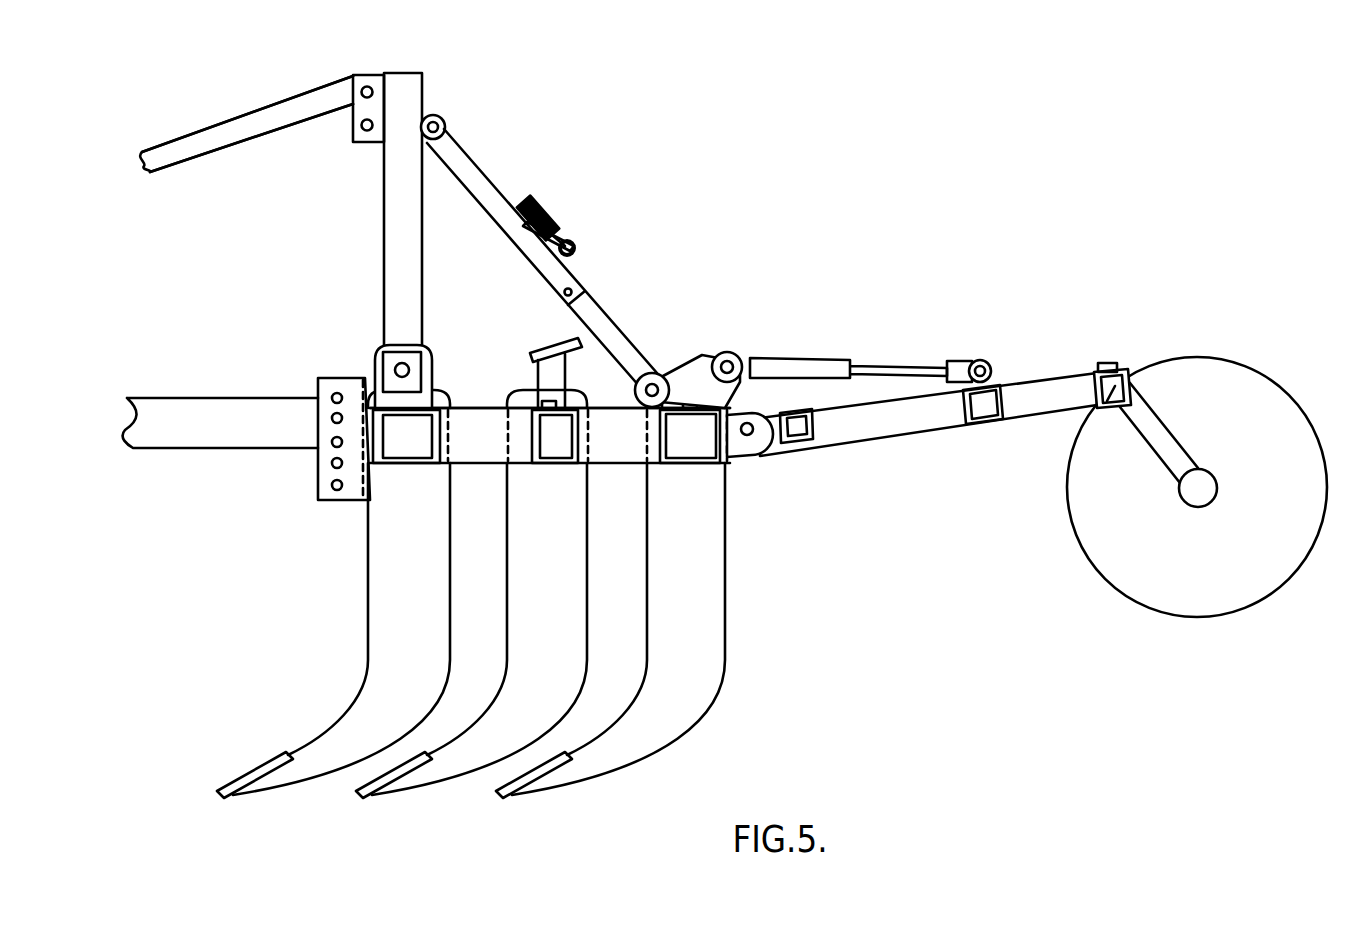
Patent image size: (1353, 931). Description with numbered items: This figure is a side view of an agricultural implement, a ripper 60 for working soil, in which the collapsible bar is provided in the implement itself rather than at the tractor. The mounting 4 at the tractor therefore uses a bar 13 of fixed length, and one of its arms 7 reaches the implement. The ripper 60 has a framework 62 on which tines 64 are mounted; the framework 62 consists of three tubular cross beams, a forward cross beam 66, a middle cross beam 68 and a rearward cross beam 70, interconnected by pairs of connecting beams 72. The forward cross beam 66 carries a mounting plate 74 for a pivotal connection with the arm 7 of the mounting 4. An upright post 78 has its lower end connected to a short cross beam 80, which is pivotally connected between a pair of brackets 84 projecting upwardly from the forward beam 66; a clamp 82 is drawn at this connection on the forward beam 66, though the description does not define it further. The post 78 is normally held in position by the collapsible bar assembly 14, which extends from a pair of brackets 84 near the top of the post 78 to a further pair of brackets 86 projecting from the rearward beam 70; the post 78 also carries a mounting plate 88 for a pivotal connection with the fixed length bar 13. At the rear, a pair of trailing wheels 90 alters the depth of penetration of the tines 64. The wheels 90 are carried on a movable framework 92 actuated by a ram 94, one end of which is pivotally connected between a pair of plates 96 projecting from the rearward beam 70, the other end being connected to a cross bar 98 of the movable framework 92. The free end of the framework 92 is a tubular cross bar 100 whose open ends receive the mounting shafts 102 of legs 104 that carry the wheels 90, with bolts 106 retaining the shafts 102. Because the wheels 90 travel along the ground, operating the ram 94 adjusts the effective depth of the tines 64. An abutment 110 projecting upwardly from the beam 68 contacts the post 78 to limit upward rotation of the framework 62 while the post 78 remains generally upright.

The mounting 4 is at (222, 110).
The arm 7 is at (175, 432).
The bar of fixed length 13 is at (188, 147).
The collapsible bar assembly 14 is at (485, 172).
The ripper 60 is at (630, 138).
The framework 62 is at (465, 468).
The tines 64 is at (393, 597).
The forward cross beam 66 is at (395, 470).
The cross beam 68 is at (522, 468).
The rearward cross beam 70 is at (660, 470).
The connecting beams 72 is at (465, 420).
The mounting plate 74 is at (330, 475).
The post 78 is at (395, 215).
The short cross beam 80 is at (378, 368).
The lower clamp 82 is at (427, 350).
The brackets 84 is at (433, 113).
The brackets 86 is at (653, 372).
The mounting plate 88 is at (377, 132).
The trailing wheels 90 is at (1097, 577).
The movable framework 92 is at (1050, 357).
The ram 94 is at (857, 357).
The plates 96 is at (707, 353).
The cross bar 98 is at (953, 407).
The tubular cross bar 100 is at (1043, 395).
The mounting shafts 102 is at (1097, 392).
The legs 104 is at (1147, 433).
The bolts 106 is at (1103, 365).
The abutment 110 is at (557, 362).